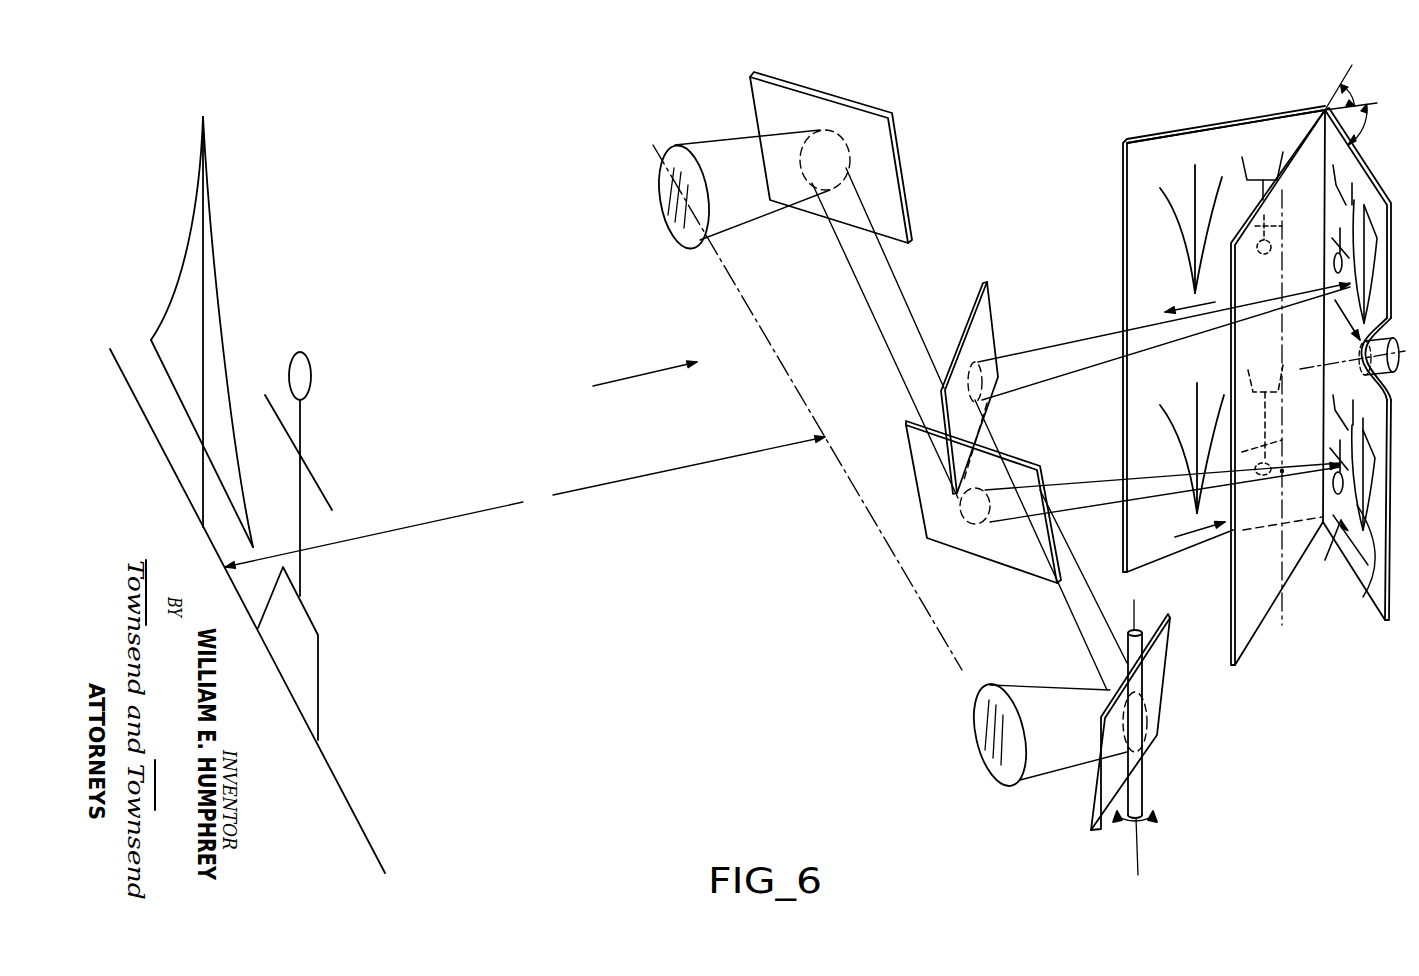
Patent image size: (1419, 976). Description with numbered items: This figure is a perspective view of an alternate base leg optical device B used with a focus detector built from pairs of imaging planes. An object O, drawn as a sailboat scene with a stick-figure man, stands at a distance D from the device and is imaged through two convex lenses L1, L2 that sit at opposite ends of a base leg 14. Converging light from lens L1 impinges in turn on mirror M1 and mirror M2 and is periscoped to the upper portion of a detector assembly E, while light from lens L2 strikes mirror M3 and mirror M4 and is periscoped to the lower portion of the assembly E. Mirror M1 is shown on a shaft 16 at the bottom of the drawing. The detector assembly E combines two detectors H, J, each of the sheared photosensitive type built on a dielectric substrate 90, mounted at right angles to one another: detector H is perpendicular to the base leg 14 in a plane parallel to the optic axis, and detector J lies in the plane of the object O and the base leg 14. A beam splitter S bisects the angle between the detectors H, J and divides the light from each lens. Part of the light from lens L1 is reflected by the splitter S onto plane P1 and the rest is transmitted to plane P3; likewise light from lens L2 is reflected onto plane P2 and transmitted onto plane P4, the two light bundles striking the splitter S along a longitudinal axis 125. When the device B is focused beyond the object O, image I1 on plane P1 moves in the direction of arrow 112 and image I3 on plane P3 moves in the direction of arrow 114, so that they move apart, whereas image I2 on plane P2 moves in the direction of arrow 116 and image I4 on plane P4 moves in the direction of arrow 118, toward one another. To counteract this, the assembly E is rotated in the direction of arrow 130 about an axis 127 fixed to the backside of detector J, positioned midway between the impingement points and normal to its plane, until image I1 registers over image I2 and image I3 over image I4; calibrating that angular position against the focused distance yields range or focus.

The object O is at (256, 330).
The distance to object D is at (525, 502).
The base leg optical device B is at (635, 382).
The base leg 14 is at (787, 378).
The first convex lens L1 is at (975, 690).
The second convex lens L2 is at (673, 143).
The first mirror M1 is at (1093, 822).
The second mirror M2 is at (983, 330).
The third mirror M3 is at (792, 105).
The fourth mirror M4 is at (930, 495).
The rotatable shaft of mirror M1 16 is at (1141, 847).
The detector assembly E is at (1125, 252).
The dielectric substrate 90 is at (1168, 133).
The detector H is at (1220, 128).
The detector J is at (1318, 110).
The first image plane P1 is at (1150, 222).
The second image plane P2 is at (1150, 522).
The third image plane P3 is at (1385, 200).
The fourth image plane P4 is at (1376, 598).
The beam splitter S is at (1258, 632).
The first image I1 is at (1182, 243).
The second image I2 is at (1180, 443).
The third image I3 is at (1360, 277).
The fourth image I4 is at (1378, 565).
The arrow 112 is at (1193, 303).
The arrow 114 is at (1345, 318).
The arrow 116 is at (1198, 537).
The arrow 118 is at (1324, 555).
The longitudinal axis 125 is at (1282, 368).
The axis of rotation 127 is at (1318, 370).
The arrow 130 is at (1368, 374).